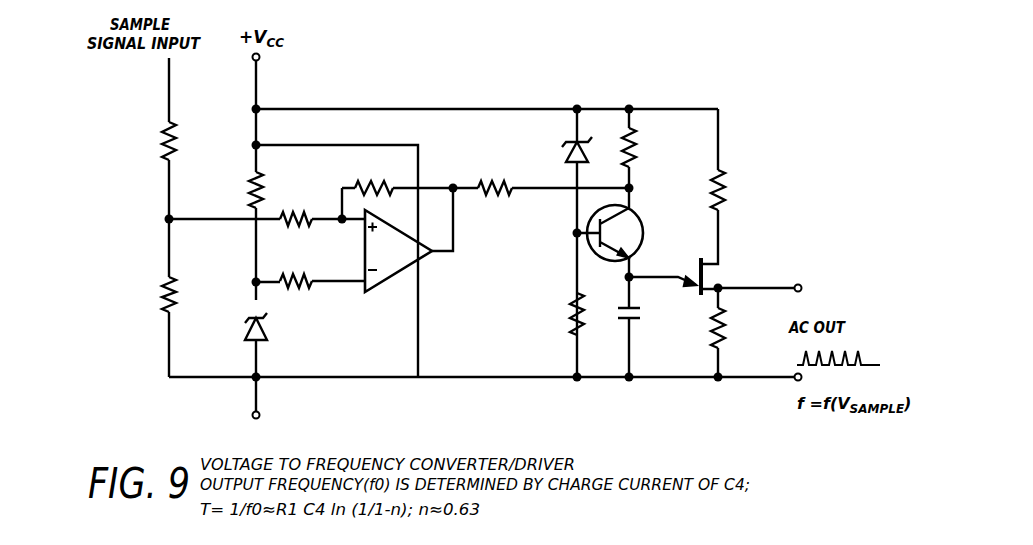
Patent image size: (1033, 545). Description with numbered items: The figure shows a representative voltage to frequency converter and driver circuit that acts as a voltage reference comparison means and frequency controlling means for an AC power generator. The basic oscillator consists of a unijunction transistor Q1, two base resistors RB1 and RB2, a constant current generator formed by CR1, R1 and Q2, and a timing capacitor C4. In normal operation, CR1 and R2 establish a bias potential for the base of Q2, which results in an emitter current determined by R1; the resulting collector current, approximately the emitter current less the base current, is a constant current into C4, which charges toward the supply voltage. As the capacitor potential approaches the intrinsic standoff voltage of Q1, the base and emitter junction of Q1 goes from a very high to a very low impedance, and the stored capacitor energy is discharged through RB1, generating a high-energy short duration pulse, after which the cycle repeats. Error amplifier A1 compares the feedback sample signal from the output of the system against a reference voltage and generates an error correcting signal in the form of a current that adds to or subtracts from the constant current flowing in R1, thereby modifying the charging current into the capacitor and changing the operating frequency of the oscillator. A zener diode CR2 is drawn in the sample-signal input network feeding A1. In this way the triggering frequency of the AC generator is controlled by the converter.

The error amplifier A1 is at (398, 251).
The constant current generator diode CR1 is at (560, 144).
The zener diode CR2 is at (277, 328).
The emitter resistor R1 is at (645, 147).
The bias resistor R2 is at (590, 310).
The base resistor RB1 is at (737, 328).
The base resistor RB2 is at (737, 190).
The timing capacitor C4 is at (642, 315).
The unijunction transistor Q1 is at (686, 270).
The transistor Q2 is at (623, 233).